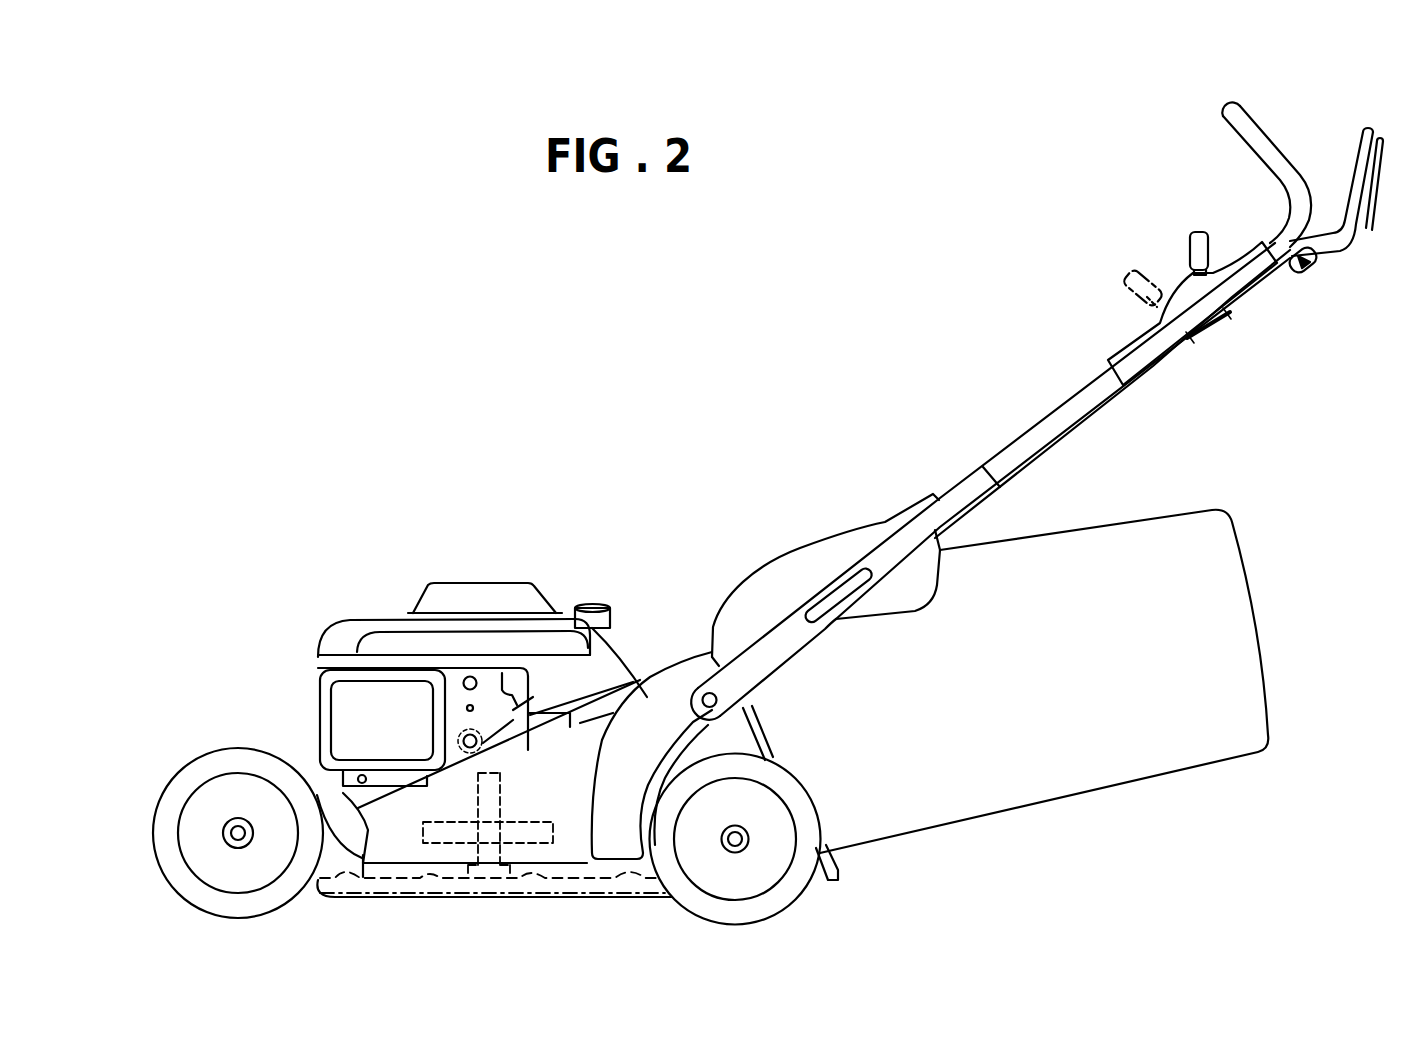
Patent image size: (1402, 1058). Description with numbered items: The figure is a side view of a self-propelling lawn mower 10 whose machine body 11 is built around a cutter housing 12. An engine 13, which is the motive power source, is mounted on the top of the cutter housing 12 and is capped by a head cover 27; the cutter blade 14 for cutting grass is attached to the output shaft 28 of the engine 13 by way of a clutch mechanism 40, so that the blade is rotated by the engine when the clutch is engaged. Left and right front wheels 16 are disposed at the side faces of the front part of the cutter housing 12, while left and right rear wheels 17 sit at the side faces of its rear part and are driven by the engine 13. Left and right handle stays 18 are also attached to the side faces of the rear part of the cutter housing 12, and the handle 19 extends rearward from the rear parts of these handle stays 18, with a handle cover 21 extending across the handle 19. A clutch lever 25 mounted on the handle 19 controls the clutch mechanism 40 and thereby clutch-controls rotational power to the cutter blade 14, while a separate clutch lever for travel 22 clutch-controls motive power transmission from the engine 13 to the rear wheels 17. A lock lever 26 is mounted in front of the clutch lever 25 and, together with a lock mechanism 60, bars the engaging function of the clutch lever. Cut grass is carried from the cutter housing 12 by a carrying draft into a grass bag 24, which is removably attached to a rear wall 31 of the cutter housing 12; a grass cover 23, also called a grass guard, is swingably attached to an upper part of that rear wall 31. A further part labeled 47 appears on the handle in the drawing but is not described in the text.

The lawn mower 10 is at (275, 197).
The machine body 11 is at (306, 472).
The cutter housing 12 is at (415, 773).
The engine 13 is at (490, 693).
The cutter blade 14 is at (408, 876).
The front wheels 16 is at (193, 757).
The rear wheels 17 is at (806, 790).
The handle stays 18 is at (587, 813).
The handle 19 is at (1037, 420).
The handle cover 21 is at (1117, 343).
The clutch lever for travel 22 is at (1380, 143).
The grass cover 23 is at (847, 528).
The grass bag 24 is at (1195, 508).
The clutch lever 25 is at (1364, 147).
The lock lever 26 is at (1190, 240).
The head cover 27 is at (390, 615).
The output shaft 28 is at (477, 790).
The rear wall 31 is at (765, 735).
The clutch mechanism 40 is at (538, 805).
The clamp 47 is at (993, 483).
The lock mechanism 60 is at (1157, 263).